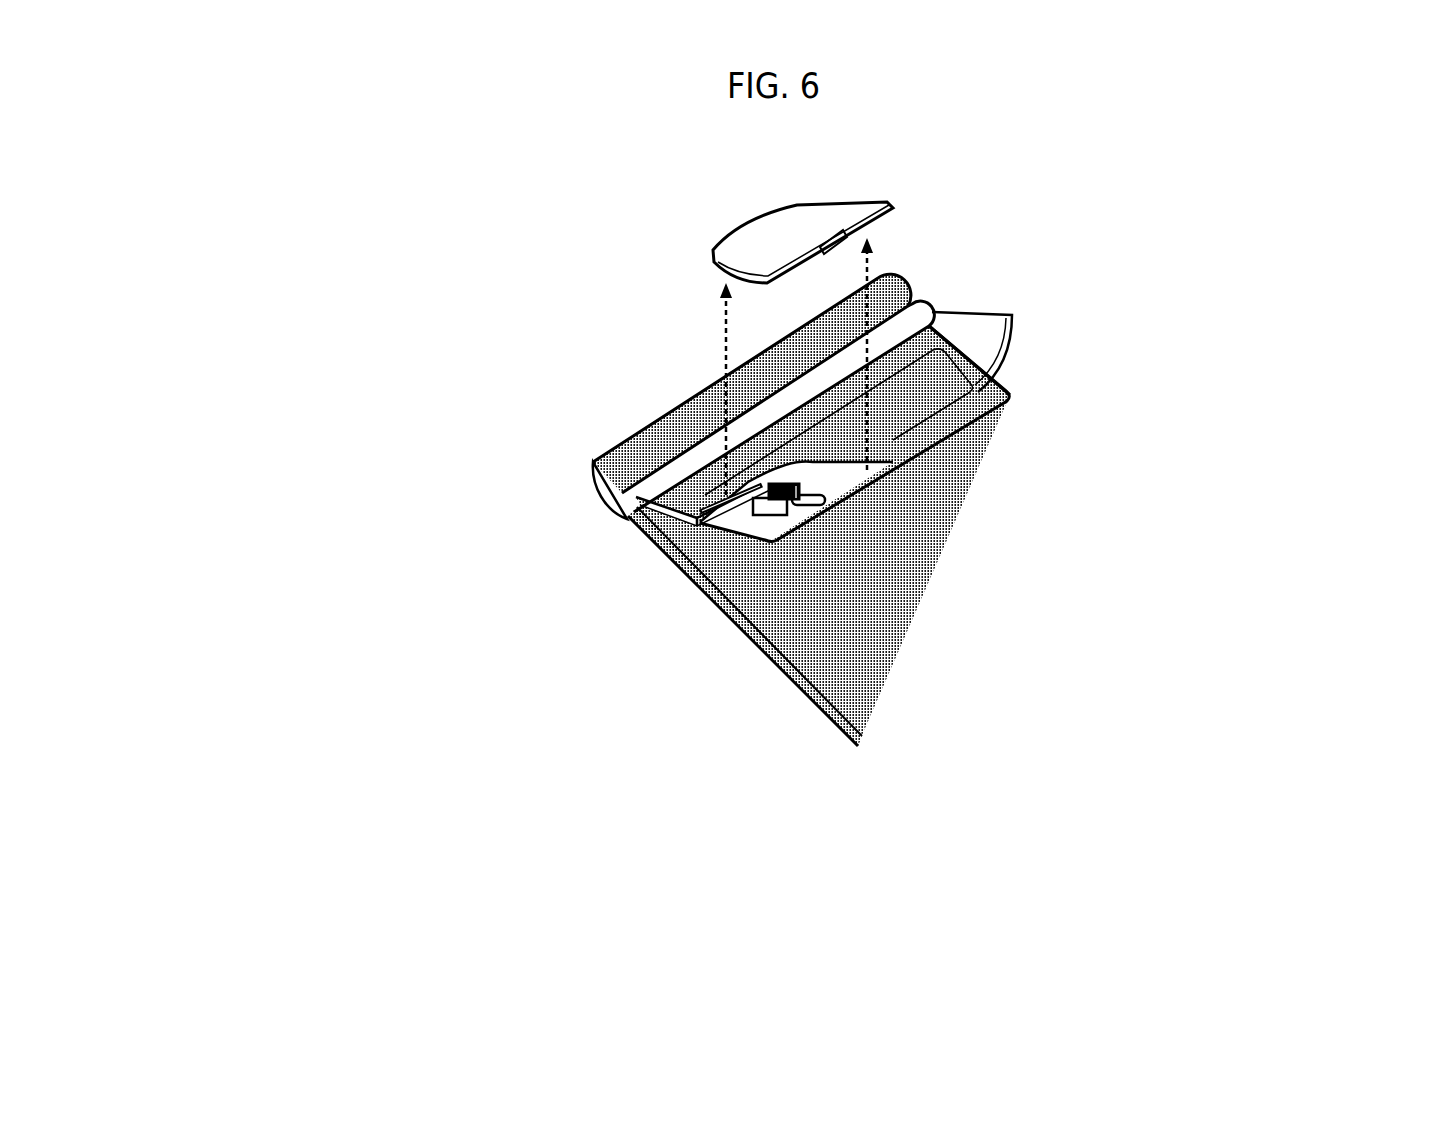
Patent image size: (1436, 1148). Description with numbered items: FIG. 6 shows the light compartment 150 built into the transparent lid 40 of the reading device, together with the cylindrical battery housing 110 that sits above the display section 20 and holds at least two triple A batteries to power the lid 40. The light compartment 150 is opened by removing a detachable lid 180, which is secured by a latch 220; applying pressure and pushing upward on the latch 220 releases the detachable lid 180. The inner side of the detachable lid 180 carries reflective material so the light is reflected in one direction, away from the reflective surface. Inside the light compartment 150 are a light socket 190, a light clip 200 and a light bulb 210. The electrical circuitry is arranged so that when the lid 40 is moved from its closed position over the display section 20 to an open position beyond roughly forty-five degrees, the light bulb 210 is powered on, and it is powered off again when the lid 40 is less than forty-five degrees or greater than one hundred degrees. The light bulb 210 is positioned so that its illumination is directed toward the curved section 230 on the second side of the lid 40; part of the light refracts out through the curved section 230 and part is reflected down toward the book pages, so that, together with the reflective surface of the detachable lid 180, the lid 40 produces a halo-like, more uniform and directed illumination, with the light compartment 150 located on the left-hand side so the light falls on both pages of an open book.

The display section 20 is at (842, 700).
The lid 40 is at (1010, 318).
The battery housing 110 is at (593, 462).
The light compartment 150 is at (765, 554).
The detachable lid 180 is at (712, 250).
The light socket 190 is at (748, 480).
The light clip 200 is at (768, 495).
The light bulb 210 is at (757, 526).
The latch 220 is at (890, 203).
The curved section 230 is at (1010, 398).